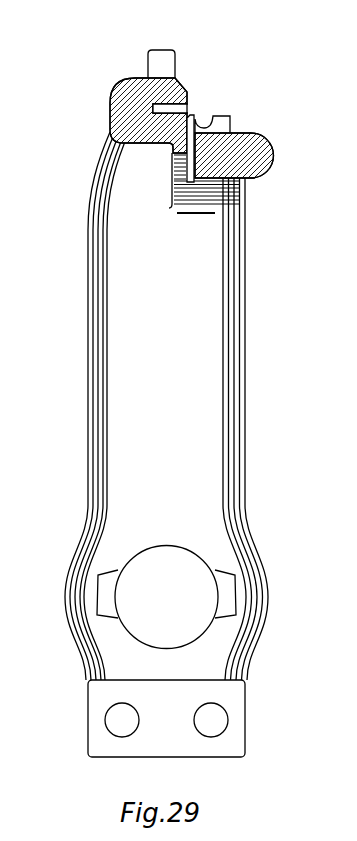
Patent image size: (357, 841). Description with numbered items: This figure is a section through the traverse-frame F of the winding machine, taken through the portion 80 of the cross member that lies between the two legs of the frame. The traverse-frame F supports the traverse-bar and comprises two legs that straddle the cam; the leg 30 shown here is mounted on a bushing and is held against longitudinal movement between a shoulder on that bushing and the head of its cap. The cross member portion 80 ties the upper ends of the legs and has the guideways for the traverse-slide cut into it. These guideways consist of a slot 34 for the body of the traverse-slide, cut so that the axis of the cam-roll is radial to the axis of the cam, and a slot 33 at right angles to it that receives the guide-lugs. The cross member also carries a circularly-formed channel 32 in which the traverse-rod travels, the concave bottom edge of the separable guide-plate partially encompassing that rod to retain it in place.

The leg of the traverse-frame 30 is at (166, 444).
The circularly-formed channel 32 is at (230, 121).
The slot for the guide-lugs 33 is at (186, 112).
The slot for the body of the traverse-slide 34 is at (194, 116).
The cross member portion of the traverse-frame 80 is at (110, 90).
The traverse-frame F is at (174, 257).